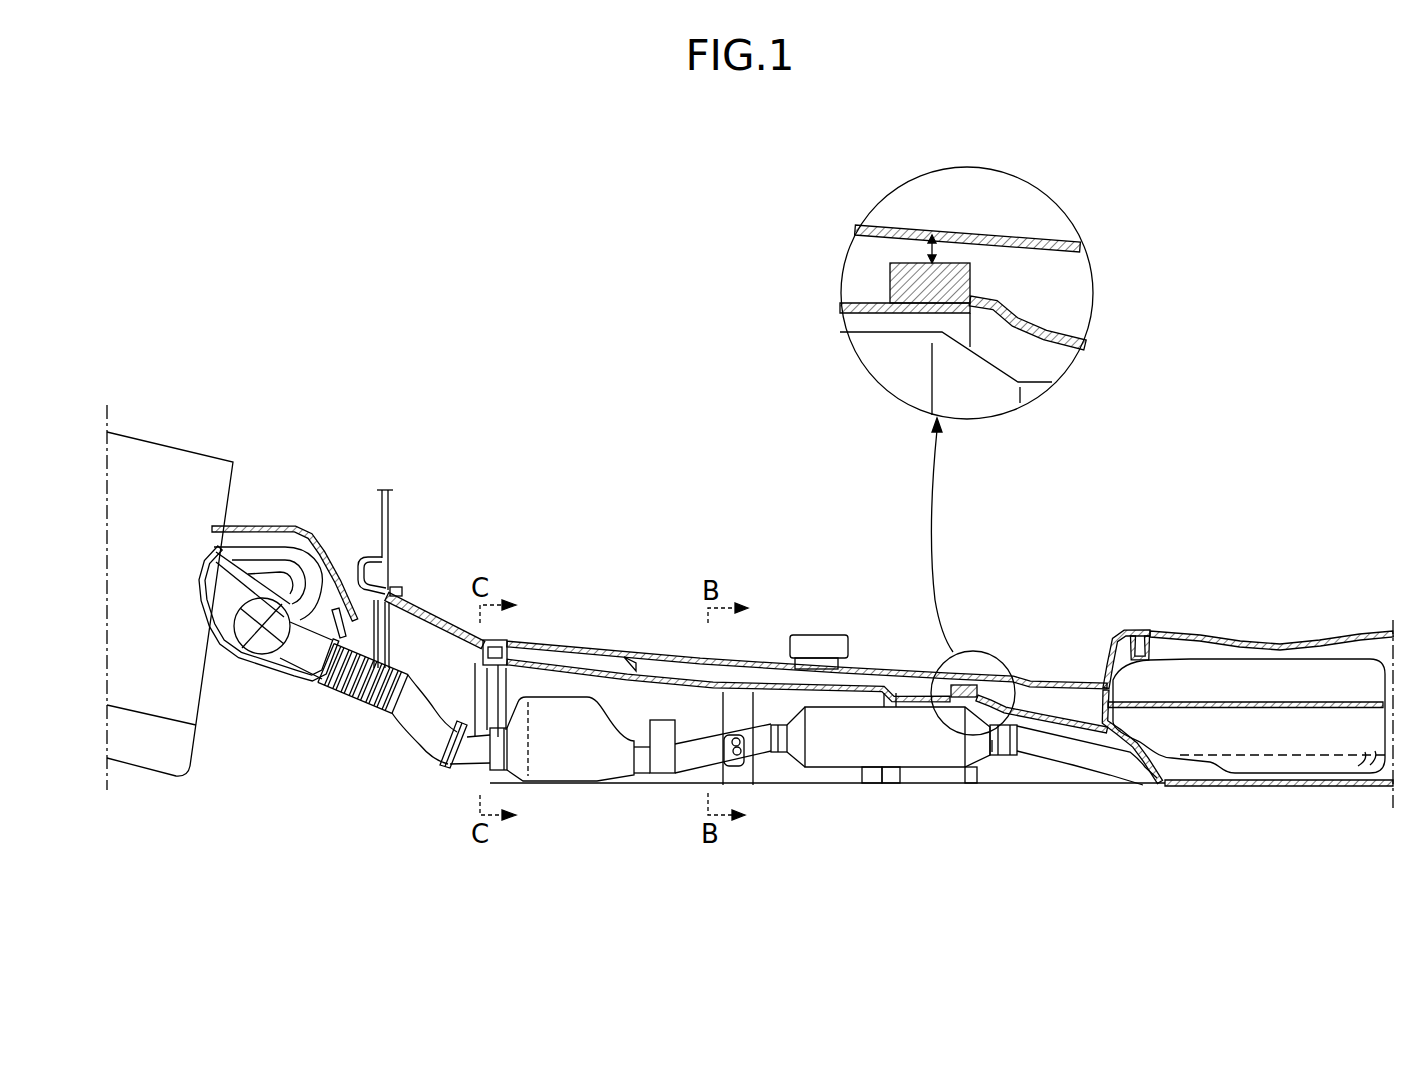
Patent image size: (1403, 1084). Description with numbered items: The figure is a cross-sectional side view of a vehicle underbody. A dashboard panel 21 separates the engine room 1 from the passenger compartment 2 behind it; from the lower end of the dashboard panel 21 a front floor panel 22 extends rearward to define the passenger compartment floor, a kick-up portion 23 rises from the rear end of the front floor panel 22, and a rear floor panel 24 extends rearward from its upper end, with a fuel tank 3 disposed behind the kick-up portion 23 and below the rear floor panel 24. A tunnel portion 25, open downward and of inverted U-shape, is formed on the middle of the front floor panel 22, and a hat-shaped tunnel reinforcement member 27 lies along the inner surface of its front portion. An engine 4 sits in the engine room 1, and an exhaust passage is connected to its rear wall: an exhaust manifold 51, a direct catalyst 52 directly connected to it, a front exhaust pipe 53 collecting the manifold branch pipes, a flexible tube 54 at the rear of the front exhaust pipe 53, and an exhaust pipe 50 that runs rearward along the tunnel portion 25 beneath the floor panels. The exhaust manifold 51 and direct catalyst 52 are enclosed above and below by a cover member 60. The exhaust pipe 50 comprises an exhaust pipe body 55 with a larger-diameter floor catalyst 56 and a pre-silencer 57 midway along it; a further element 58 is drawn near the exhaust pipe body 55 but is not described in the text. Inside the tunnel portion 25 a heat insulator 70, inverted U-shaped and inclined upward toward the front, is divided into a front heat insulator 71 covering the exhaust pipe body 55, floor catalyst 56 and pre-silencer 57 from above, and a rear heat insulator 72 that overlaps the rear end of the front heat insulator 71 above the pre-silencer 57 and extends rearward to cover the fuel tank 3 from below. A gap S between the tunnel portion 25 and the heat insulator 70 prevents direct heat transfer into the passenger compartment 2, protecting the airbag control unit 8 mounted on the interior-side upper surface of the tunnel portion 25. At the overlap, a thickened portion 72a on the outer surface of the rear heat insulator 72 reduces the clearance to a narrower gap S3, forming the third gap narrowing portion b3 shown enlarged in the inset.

The engine room 1 is at (344, 534).
The passenger compartment 2 is at (437, 534).
The fuel tank 3 is at (1357, 667).
The engine 4 is at (197, 445).
The airbag control unit 8 is at (818, 634).
The dashboard panel 21 is at (390, 511).
The front floor panel 22 is at (807, 428).
The kick-up portion 23 is at (1110, 640).
The rear floor panel 24 is at (1226, 637).
The tunnel portion 25 is at (1060, 190).
The tunnel reinforcement member 27 is at (535, 641).
The exhaust pipe 50 is at (1068, 782).
The exhaust manifold 51 is at (252, 544).
The direct catalyst 52 is at (254, 660).
The front exhaust pipe 53 is at (291, 664).
The flexible tube 54 is at (365, 712).
The exhaust pipe body 55 is at (423, 760).
The floor catalyst 56 is at (567, 768).
The pre-silencer 57 is at (862, 757).
The pipe support bracket 58 is at (745, 775).
The cover member 60 is at (310, 514).
The heat insulator 70 is at (628, 656).
The front heat insulator 71 is at (713, 683).
The rear heat insulator 72 is at (1030, 707).
The thickened portion 72a is at (973, 273).
The gap S is at (673, 673).
The gap S3 is at (931, 236).
The third gap narrowing portion b3 is at (952, 198).